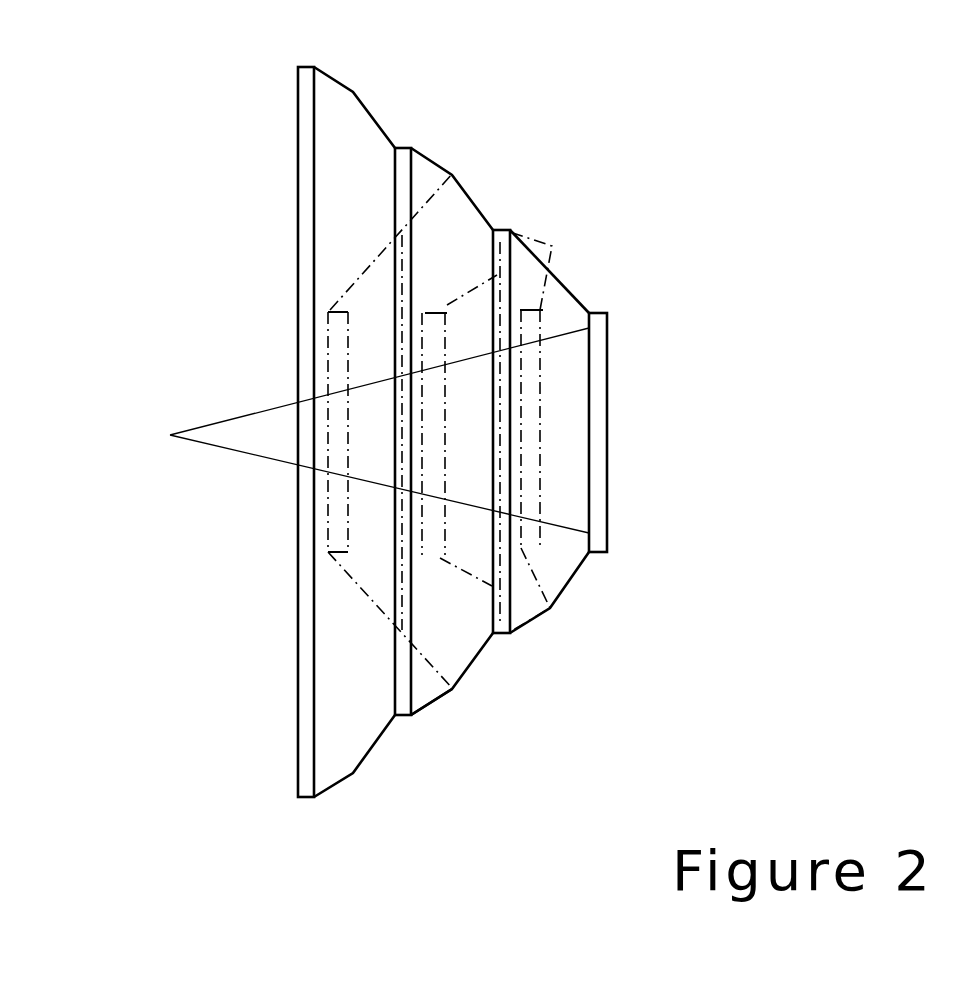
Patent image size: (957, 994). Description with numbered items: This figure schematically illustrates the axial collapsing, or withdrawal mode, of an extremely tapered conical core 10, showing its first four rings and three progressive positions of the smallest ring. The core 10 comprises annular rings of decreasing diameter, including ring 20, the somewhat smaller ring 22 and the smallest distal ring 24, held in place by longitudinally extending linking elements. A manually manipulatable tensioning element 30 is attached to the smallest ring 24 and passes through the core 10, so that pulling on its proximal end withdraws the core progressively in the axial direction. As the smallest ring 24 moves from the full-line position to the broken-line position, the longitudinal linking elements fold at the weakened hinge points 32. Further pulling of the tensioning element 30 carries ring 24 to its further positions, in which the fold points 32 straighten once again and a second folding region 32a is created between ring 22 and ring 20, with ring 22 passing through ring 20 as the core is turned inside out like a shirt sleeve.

The core 10 is at (298, 592).
The ring 20 is at (411, 148).
The ring 22 is at (510, 230).
The smallest ring 24 is at (543, 310).
The tensioning element 30 is at (210, 448).
The weakened hinge points 32 is at (550, 608).
The second folding region 32a is at (452, 689).